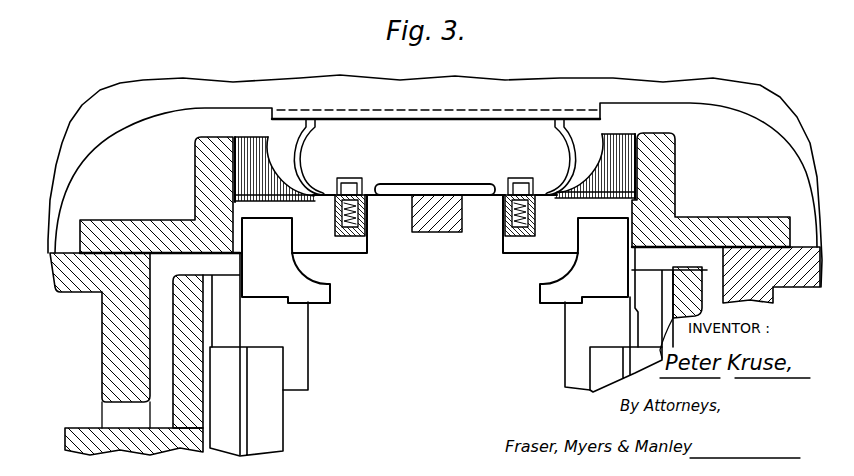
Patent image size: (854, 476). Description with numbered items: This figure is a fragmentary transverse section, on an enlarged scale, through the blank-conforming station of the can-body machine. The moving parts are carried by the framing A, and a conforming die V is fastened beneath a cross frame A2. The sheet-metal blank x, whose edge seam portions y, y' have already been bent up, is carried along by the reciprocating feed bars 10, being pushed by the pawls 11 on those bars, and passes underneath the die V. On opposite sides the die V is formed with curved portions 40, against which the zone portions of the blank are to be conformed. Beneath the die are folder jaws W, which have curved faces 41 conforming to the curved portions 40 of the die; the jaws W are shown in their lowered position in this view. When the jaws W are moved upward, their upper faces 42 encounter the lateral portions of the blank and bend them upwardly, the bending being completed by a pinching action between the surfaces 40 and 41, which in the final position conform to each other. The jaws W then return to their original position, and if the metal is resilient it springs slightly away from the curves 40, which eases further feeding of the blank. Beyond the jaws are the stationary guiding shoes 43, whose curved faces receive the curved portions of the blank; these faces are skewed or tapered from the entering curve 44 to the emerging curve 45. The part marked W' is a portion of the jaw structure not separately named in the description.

The framing A is at (110, 346).
The cross frame A2 is at (546, 88).
The reciprocating feed bars 10 is at (367, 224).
The pawls 11 is at (352, 188).
The curved portions 40 is at (306, 177).
The curved faces 41 is at (315, 270).
The upper faces 42 is at (435, 260).
The stationary guiding shoes 43 is at (238, 156).
The entering curve 44 is at (312, 196).
The emerging curve 45 is at (262, 160).
The conforming die V is at (448, 159).
The folder jaws W is at (455, 351).
The wheel tread W' is at (436, 401).
The sheet-metal blank x is at (466, 196).
The edge seam portion y is at (281, 143).
The edge seam portion y' is at (609, 165).